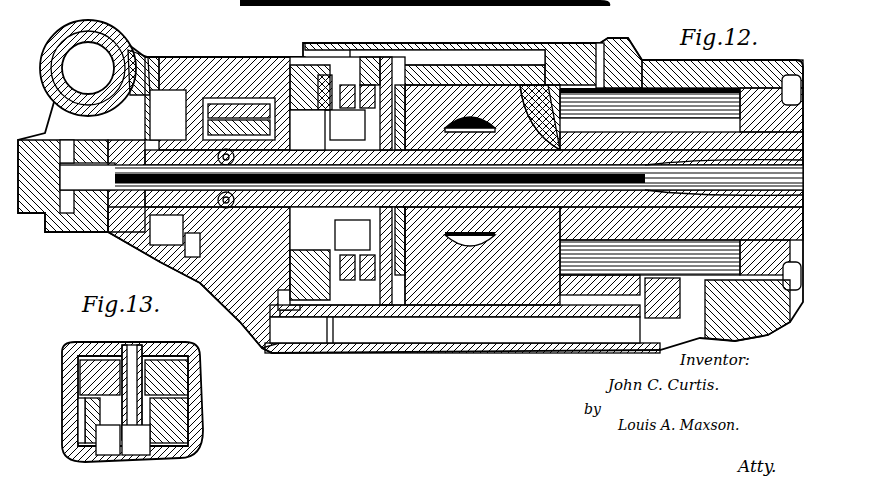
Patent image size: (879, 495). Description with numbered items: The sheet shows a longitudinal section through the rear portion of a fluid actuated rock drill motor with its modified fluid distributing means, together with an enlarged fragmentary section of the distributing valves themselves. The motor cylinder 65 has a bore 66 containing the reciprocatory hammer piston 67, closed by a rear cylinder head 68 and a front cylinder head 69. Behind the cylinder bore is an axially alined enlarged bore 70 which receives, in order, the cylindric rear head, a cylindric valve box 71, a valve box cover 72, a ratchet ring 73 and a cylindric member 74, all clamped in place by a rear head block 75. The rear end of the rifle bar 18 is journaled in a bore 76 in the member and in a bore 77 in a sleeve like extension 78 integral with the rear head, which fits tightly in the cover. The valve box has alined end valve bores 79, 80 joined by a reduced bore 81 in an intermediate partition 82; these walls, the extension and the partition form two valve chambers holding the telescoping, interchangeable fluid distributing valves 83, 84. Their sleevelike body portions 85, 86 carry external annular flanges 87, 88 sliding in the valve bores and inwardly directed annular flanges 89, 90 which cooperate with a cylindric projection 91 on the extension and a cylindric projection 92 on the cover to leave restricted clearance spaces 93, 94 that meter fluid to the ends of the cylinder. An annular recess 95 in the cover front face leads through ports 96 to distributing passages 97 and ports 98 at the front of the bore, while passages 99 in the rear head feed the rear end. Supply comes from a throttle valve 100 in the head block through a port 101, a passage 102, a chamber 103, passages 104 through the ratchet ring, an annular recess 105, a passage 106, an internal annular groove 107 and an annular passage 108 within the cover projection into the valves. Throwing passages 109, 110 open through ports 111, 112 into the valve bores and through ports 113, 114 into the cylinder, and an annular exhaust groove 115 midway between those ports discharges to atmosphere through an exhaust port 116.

In FIG. 12, the rifle bar 18 is at (572, 98).
In FIG. 12, the motor cylinder 65 is at (468, 85).
In FIG. 12, the bore 66 is at (560, 278).
In FIG. 12, the reciprocatory hammer piston 67 is at (525, 90).
In FIG. 12, the rear cylinder head 68 is at (392, 305).
In FIG. 13, the rear cylinder head 68 is at (182, 348).
In FIG. 12, the front cylinder head 69 is at (792, 300).
In FIG. 12, the enlarged bore 70 is at (240, 60).
In FIG. 12, the valve box 71 is at (352, 305).
In FIG. 13, the valve box 71 is at (88, 350).
In FIG. 12, the valve box cover 72 is at (312, 66).
In FIG. 13, the valve box cover 72 is at (78, 348).
In FIG. 12, the ratchet ring 73 is at (216, 60).
In FIG. 12, the cylindric member 74 is at (186, 58).
In FIG. 12, the rear head block 75 is at (90, 232).
In FIG. 12, the bore 76 is at (168, 115).
In FIG. 12, the bore 77 is at (352, 235).
In FIG. 12, the sleeve like extension 78 is at (347, 125).
In FIG. 12, the end valve bore 79 is at (386, 57).
In FIG. 13, the end valve bore 79 is at (196, 358).
In FIG. 12, the end valve bore 80 is at (348, 85).
In FIG. 13, the end valve bore 80 is at (68, 358).
In FIG. 12, the reduced bore 81 is at (334, 305).
In FIG. 13, the reduced bore 81 is at (136, 440).
In FIG. 12, the intermediate partition 82 is at (366, 85).
In FIG. 13, the intermediate partition 82 is at (134, 350).
In FIG. 12, the fluid distributing valve 83 is at (400, 85).
In FIG. 13, the fluid distributing valve 83 is at (195, 375).
In FIG. 12, the fluid distributing valve 84 is at (328, 75).
In FIG. 13, the fluid distributing valve 84 is at (78, 386).
In FIG. 12, the sleevelike body portion 85 is at (447, 57).
In FIG. 13, the sleevelike body portion 85 is at (190, 430).
In FIG. 12, the sleevelike body portion 86 is at (316, 305).
In FIG. 13, the sleevelike body portion 86 is at (108, 440).
In FIG. 12, the annular flange 87 is at (372, 305).
In FIG. 13, the annular flange 87 is at (166, 358).
In FIG. 12, the annular flange 88 is at (296, 308).
In FIG. 13, the annular flange 88 is at (104, 358).
In FIG. 12, the inwardly directed annular flange 89 is at (437, 67).
In FIG. 13, the inwardly directed annular flange 89 is at (188, 446).
In FIG. 13, the inwardly directed annular flange 90 is at (70, 428).
In FIG. 13, the cylindric projection 91 is at (172, 456).
In FIG. 13, the cylindric projection 92 is at (78, 456).
In FIG. 13, the restricted clearance space 93 is at (182, 458).
In FIG. 13, the restricted clearance space 94 is at (70, 442).
In FIG. 12, the annular recess 95 is at (296, 110).
In FIG. 13, the annular recess 95 is at (75, 400).
In FIG. 12, the port 96 is at (263, 347).
In FIG. 12, the distributing passage 97 is at (542, 43).
In FIG. 12, the port 98 is at (738, 318).
In FIG. 12, the passage 99 is at (428, 50).
In FIG. 13, the passage 99 is at (186, 395).
In FIG. 12, the throttle valve 100 is at (62, 52).
In FIG. 12, the port 101 is at (108, 36).
In FIG. 12, the passage 102 is at (140, 50).
In FIG. 12, the chamber 103 is at (154, 60).
In FIG. 12, the passage 104 is at (168, 246).
In FIG. 12, the annular recess 105 is at (255, 300).
In FIG. 12, the passage 106 is at (255, 98).
In FIG. 12, the internal annular groove 107 is at (268, 104).
In FIG. 12, the annular passage 108 is at (285, 57).
In FIG. 12, the throwing passage 109 is at (458, 110).
In FIG. 12, the throwing passage 110 is at (484, 306).
In FIG. 12, the port 111 is at (370, 57).
In FIG. 13, the port 111 is at (124, 350).
In FIG. 12, the port 112 is at (330, 344).
In FIG. 12, the port 113 is at (590, 62).
In FIG. 12, the port 114 is at (650, 318).
In FIG. 12, the annular exhaust groove 115 is at (650, 64).
In FIG. 12, the exhaust port 116 is at (600, 45).